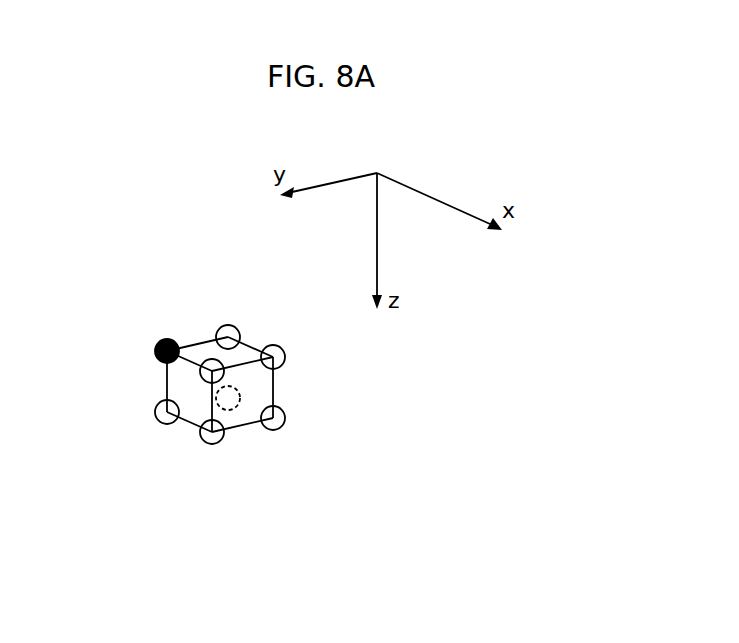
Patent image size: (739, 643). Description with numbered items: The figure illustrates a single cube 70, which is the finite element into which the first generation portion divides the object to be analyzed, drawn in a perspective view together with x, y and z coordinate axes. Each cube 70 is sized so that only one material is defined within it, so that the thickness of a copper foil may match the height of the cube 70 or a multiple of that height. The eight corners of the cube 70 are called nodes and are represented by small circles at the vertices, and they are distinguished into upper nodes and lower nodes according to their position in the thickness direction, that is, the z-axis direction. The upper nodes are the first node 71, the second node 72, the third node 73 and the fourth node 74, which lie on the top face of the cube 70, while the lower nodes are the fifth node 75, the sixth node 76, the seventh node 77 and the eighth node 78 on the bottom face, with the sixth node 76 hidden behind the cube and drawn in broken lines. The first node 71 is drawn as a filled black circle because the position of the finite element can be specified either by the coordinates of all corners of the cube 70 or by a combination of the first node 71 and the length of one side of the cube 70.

The cube 70 is at (251, 432).
The first node 71 is at (163, 340).
The second node 72 is at (228, 325).
The third node 73 is at (285, 355).
The fourth node 74 is at (200, 371).
The fifth node 75 is at (164, 423).
The sixth node 76 is at (240, 399).
The seventh node 77 is at (285, 421).
The eighth node 78 is at (212, 446).